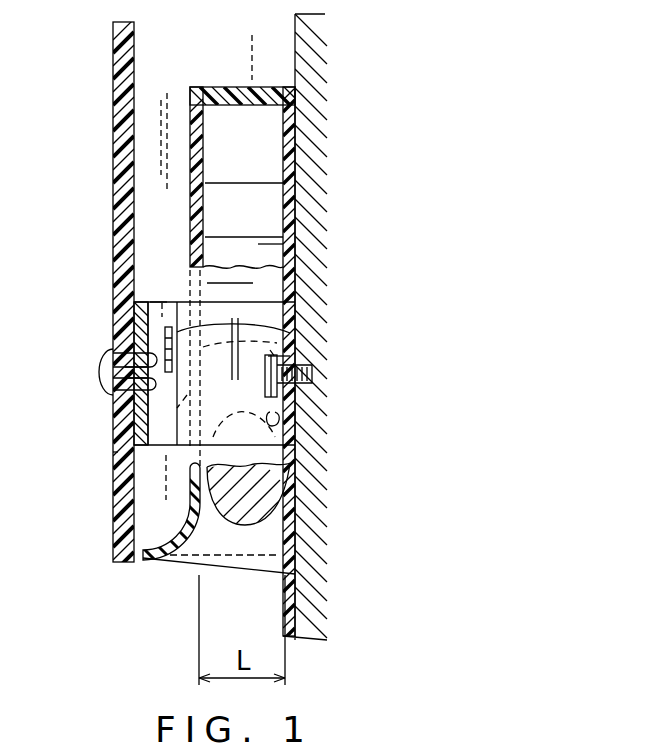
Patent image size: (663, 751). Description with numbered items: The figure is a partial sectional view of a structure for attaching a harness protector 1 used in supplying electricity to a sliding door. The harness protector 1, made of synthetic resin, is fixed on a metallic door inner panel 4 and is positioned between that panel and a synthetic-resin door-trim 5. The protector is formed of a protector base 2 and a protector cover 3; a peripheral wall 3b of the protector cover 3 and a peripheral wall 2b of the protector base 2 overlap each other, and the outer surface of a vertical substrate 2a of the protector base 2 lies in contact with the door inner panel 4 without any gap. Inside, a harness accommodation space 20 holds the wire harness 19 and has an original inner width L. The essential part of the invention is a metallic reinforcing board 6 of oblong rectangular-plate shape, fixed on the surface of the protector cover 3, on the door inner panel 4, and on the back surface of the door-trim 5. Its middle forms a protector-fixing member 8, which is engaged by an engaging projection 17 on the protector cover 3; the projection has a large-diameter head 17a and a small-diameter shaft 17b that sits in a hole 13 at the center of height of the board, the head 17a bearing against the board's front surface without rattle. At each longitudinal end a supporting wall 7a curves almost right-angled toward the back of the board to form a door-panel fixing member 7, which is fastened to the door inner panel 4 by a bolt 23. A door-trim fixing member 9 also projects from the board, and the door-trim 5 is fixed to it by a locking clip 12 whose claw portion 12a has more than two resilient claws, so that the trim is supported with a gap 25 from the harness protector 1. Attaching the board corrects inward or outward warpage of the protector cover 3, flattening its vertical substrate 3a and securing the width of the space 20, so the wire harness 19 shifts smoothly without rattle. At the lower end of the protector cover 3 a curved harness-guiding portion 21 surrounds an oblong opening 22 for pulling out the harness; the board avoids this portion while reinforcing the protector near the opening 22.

The harness protector 1 is at (237, 335).
The protector base 2 is at (303, 363).
The vertical substrate of the protector base 2a is at (300, 215).
The peripheral wall of the protector base 2b is at (233, 107).
The protector cover 3 is at (221, 149).
The vertical substrate of the protector cover 3a is at (190, 163).
The peripheral wall of the protector cover 3b is at (243, 88).
The door inner panel 4 is at (295, 52).
The door-trim 5 is at (113, 55).
The reinforcing board 6 is at (158, 290).
The door-panel fixing member 7 is at (275, 377).
The supporting wall 7a is at (265, 302).
The protector-fixing member 8 is at (172, 302).
The door-trim fixing member 9 is at (140, 320).
The locking clip 12 is at (100, 372).
The claw portion 12a is at (145, 420).
The hole 13 is at (112, 452).
The engaging projection 17 is at (327, 382).
The head 17a is at (275, 343).
The shaft 17b is at (312, 360).
The wire harness 19 is at (295, 515).
The harness accommodation space 20 is at (262, 244).
The harness-guiding portion 21 is at (148, 535).
The oblong opening 22 is at (175, 577).
The bolt 23 is at (313, 378).
The gap 25 is at (160, 117).